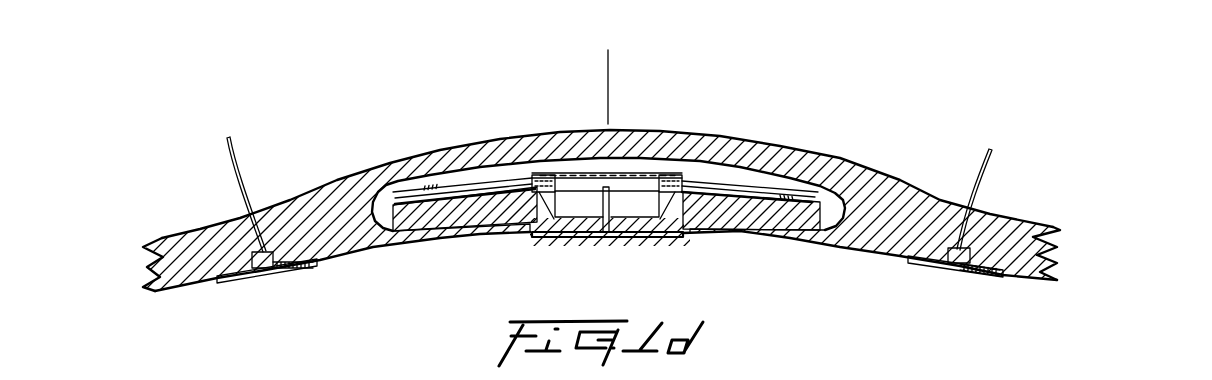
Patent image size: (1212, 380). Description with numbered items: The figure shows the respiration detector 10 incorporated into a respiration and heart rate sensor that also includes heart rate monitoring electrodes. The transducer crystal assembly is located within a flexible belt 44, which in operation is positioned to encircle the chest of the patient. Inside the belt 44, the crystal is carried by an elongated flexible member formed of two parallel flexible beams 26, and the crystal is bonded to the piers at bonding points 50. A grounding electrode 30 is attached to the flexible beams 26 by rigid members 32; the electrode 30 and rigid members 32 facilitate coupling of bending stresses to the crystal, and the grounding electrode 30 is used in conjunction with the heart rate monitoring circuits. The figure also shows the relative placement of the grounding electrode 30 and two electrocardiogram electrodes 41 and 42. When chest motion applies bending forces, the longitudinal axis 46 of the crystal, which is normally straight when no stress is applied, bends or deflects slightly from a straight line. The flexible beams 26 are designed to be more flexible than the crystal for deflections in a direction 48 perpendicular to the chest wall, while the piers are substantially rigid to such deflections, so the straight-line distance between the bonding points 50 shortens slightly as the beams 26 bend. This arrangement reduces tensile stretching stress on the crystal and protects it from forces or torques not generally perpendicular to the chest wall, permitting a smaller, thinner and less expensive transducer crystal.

The respiration detector 10 is at (870, 160).
The flexible beams 26 is at (757, 188).
The grounding electrode 30 is at (653, 238).
The rigid members 32 is at (610, 207).
The electrocardiogram electrode 41 is at (258, 278).
The electrocardiogram electrode 42 is at (957, 268).
The flexible belt 44 is at (419, 156).
The longitudinal axis 46 is at (528, 177).
The direction perpendicular to the chest wall 48 is at (610, 84).
The bonding points 50 is at (545, 200).